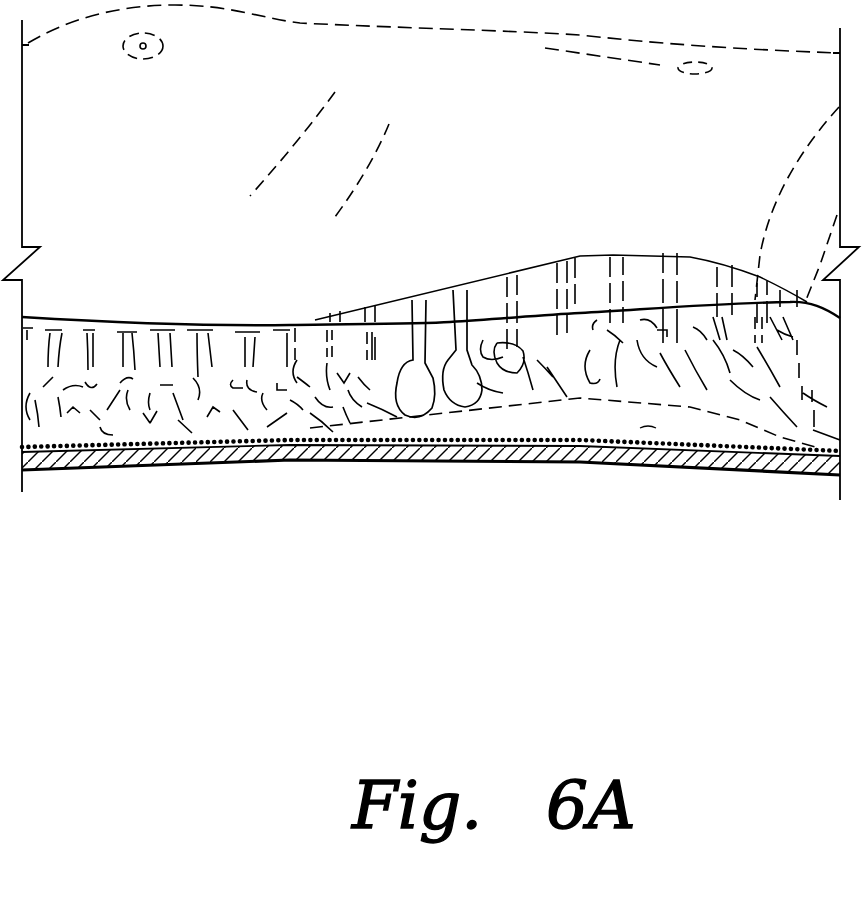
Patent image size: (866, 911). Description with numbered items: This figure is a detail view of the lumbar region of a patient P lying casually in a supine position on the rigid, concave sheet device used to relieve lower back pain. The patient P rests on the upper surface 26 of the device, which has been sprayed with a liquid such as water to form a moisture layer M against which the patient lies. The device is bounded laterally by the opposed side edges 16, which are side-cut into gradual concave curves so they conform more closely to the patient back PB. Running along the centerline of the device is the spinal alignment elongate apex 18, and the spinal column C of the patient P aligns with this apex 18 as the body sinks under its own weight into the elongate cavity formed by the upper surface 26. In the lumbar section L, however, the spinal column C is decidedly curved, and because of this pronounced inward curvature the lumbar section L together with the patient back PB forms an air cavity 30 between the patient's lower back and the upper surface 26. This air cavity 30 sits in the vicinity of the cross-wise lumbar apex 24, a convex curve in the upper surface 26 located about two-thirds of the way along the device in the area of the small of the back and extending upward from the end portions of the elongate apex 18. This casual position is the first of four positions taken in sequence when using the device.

The opposed side edges 16 is at (481, 314).
The lumbar section L is at (643, 310).
The patient P is at (170, 132).
The spinal column C is at (210, 412).
The moisture layer M is at (326, 447).
The patient back PB is at (522, 410).
The cross-wise lumbar apex 24 is at (624, 462).
The upper surface 26 is at (563, 462).
The air cavity 30 is at (648, 427).
The spinal alignment elongate apex 18 is at (758, 470).